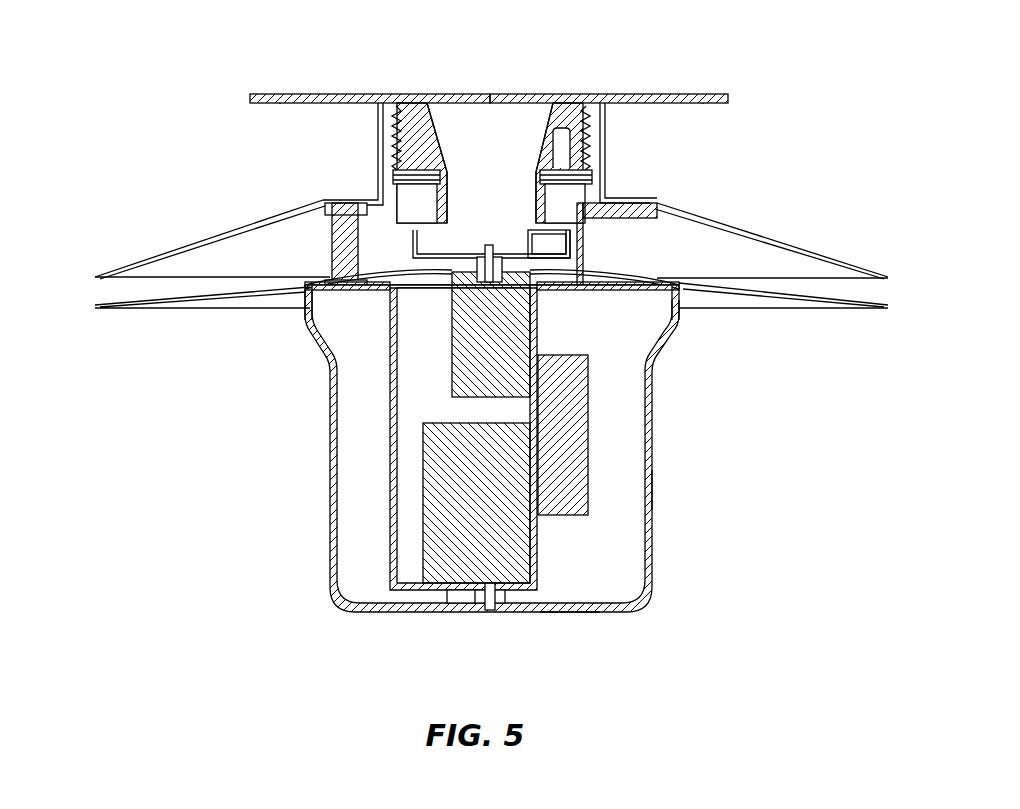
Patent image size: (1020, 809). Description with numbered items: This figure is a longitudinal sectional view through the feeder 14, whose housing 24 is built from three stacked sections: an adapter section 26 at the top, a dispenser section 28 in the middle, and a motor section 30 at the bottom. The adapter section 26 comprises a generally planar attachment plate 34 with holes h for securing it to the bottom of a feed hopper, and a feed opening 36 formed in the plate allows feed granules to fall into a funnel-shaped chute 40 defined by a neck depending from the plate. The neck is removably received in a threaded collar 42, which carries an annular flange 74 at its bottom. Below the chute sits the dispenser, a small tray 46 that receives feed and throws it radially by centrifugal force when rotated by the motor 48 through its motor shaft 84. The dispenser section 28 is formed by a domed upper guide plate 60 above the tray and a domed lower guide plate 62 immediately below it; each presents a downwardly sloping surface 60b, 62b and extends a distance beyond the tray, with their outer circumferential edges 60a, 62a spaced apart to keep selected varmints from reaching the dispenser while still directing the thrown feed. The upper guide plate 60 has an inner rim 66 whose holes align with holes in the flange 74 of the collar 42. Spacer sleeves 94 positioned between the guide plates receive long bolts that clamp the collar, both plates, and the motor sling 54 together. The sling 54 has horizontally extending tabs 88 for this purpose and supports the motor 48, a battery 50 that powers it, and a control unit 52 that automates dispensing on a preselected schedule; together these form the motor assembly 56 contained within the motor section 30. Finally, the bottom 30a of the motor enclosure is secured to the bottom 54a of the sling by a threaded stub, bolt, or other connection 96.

The feeder 14 is at (782, 98).
The housing 24 is at (330, 413).
The adapter section 26 is at (355, 92).
The dispenser section 28 is at (207, 233).
The motor section 30 is at (652, 490).
The bottom of the motor enclosure 30a is at (563, 613).
The attachment plate 34 is at (635, 97).
The feed opening 36 is at (452, 97).
The chute 40 is at (512, 178).
The collar 42 is at (605, 165).
The tray 46 is at (462, 252).
The motor 48 is at (452, 348).
The battery 50 is at (505, 553).
The control unit 52 is at (582, 445).
The sling 54 is at (388, 345).
The bottom of the motor sling 54a is at (452, 605).
The motor assembly 56 is at (590, 332).
The upper guide plate 60 is at (768, 233).
The outer circumferential edge of the upper guide plate 60a is at (873, 268).
The sloping surface of the upper guide plate 60b is at (192, 255).
The lower guide plate 62 is at (767, 290).
The outer circumferential edge of the lower guide plate 62a is at (875, 307).
The sloping surface of the lower guide plate 62b is at (133, 298).
The inner rim 66 is at (363, 198).
The annular flange 74 is at (632, 232).
The motor shaft 84 is at (486, 250).
The tabs 88 is at (540, 292).
The spacer sleeves 94 is at (348, 245).
The connection 96 is at (492, 610).
The holes h is at (283, 104).